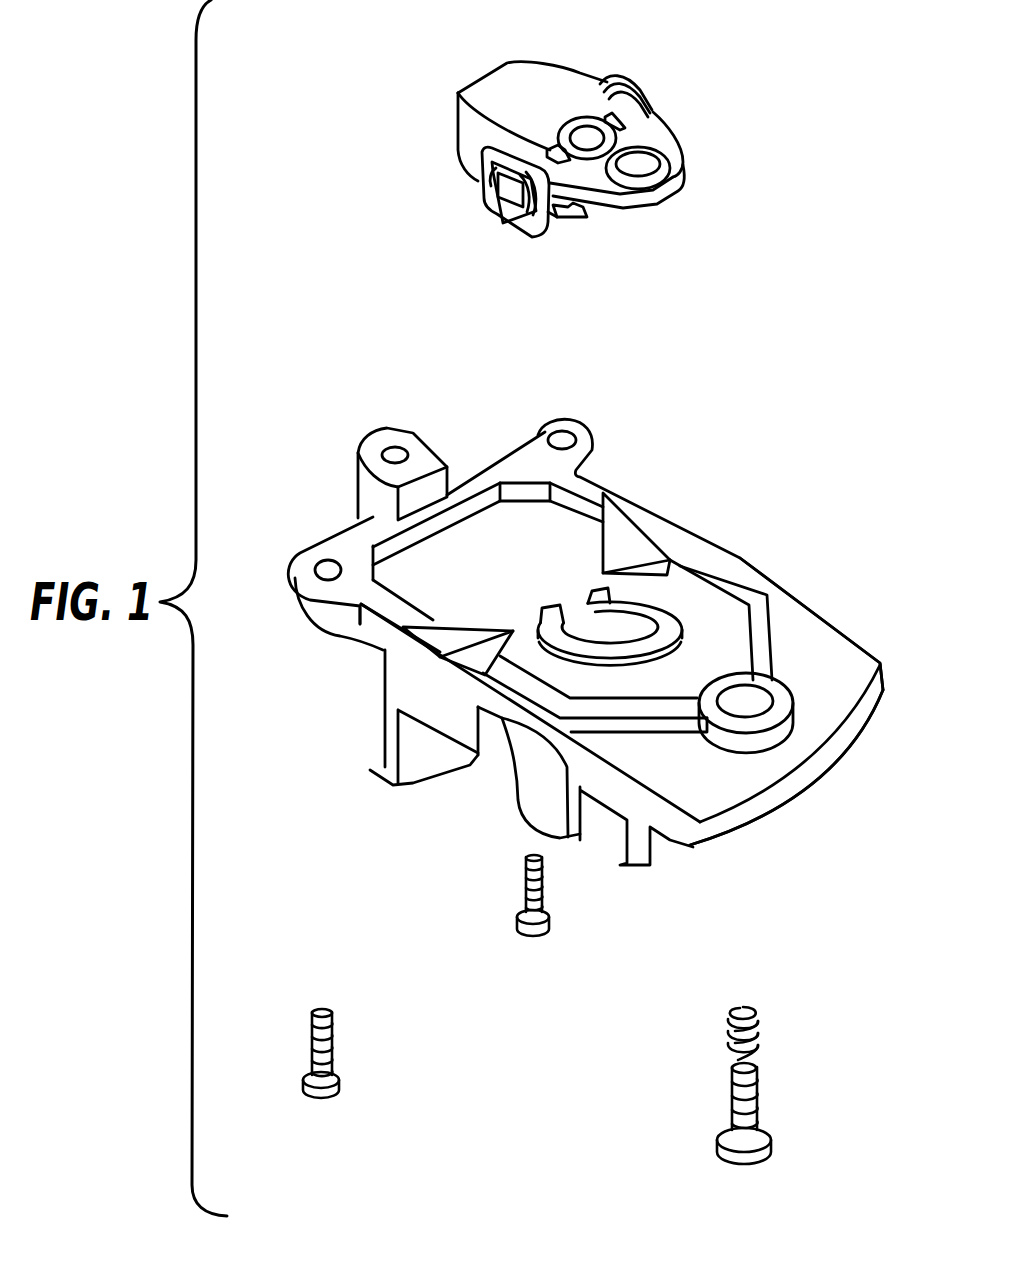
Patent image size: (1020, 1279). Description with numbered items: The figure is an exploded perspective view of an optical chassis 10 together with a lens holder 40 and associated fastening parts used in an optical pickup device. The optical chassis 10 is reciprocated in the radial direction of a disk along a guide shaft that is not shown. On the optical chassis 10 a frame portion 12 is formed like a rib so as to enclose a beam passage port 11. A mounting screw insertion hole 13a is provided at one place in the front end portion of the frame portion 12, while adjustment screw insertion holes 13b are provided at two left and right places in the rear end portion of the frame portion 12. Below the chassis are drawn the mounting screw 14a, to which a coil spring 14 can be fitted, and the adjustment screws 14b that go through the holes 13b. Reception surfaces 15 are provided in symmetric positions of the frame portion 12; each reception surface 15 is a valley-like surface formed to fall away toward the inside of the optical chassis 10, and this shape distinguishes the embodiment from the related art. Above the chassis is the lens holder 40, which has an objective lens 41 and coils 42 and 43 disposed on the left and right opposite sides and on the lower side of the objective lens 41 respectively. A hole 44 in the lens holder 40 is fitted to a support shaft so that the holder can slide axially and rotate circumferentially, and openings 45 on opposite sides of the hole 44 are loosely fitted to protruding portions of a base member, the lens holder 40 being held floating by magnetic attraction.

The optical chassis 10 is at (778, 543).
The beam passage port 11 is at (628, 630).
The frame portion 12 is at (773, 647).
The mounting screw insertion hole 13a is at (757, 702).
The adjustment screw insertion holes 13b is at (324, 563).
The coil spring 14 is at (758, 1033).
The mounting screw 14a is at (752, 1105).
The adjustment screw 14b is at (545, 893).
The reception surfaces 15 is at (622, 527).
The lens holder 40 is at (710, 162).
The objective lens 41 is at (650, 166).
The coils 42 is at (640, 84).
The coil 43 is at (573, 215).
The hole 44 is at (585, 132).
The openings 45 is at (553, 150).